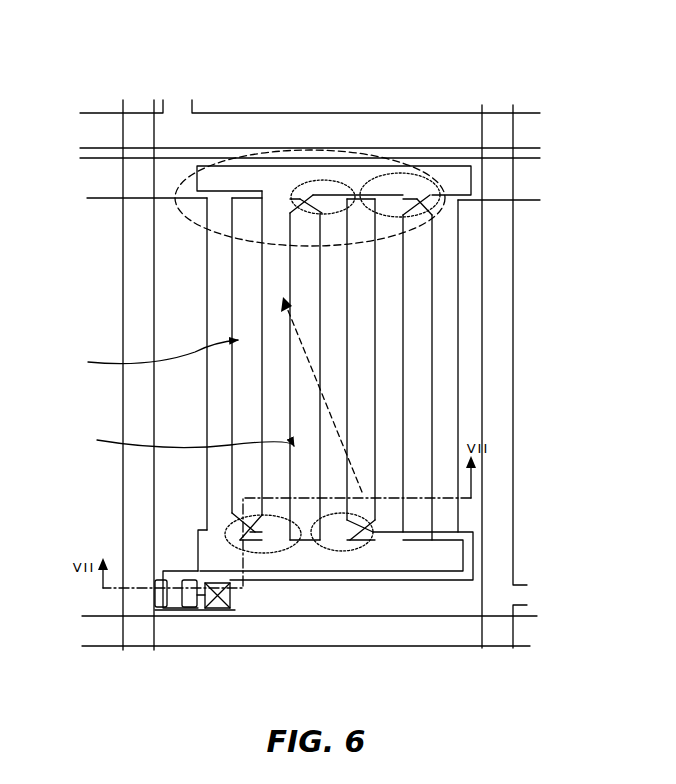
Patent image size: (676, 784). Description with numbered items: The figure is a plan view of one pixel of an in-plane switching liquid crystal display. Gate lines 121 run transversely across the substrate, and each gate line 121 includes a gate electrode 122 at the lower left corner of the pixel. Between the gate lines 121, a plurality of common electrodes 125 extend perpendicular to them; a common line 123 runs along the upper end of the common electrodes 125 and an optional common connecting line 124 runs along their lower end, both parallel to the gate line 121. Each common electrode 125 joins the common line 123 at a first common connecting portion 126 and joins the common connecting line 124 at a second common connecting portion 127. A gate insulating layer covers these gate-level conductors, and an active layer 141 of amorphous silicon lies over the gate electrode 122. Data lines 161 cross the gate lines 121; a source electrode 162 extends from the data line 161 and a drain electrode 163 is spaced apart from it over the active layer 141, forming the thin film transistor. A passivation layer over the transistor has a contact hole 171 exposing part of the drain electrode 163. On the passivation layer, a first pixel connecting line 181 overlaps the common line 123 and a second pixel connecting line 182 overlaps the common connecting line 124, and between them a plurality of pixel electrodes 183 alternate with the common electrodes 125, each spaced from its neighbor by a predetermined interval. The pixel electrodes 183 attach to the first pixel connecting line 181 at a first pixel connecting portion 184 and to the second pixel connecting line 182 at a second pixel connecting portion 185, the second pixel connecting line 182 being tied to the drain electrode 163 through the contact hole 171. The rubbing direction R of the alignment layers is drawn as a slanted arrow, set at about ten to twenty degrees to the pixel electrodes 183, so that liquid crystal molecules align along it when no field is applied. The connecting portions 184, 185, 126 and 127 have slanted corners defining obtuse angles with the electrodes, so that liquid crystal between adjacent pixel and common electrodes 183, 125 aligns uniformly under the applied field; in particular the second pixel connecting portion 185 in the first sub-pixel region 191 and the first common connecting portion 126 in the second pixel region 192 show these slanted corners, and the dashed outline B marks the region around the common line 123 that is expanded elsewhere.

The gate line 121 is at (243, 113).
The gate electrode 122 is at (170, 571).
The common line 123 is at (297, 165).
The common connecting line 124 is at (413, 580).
The common electrode 125 is at (220, 312).
The first common connecting portion 126 is at (342, 185).
The second common connecting portion 127 is at (373, 529).
The active layer 141 is at (178, 610).
The data line 161 is at (123, 262).
The source electrode 162 is at (165, 607).
The drain electrode 163 is at (190, 607).
The contact hole 171 is at (230, 598).
The first pixel connecting line 181 is at (422, 165).
The second pixel connecting line 182 is at (352, 572).
The pixel electrode 183 is at (400, 288).
The first pixel connecting portion 184 is at (432, 203).
The second pixel connecting portion 185 is at (255, 530).
The first sub-pixel region 191 is at (145, 358).
The second pixel region 192 is at (179, 437).
The region B is at (445, 190).
The rubbing direction R is at (440, 342).